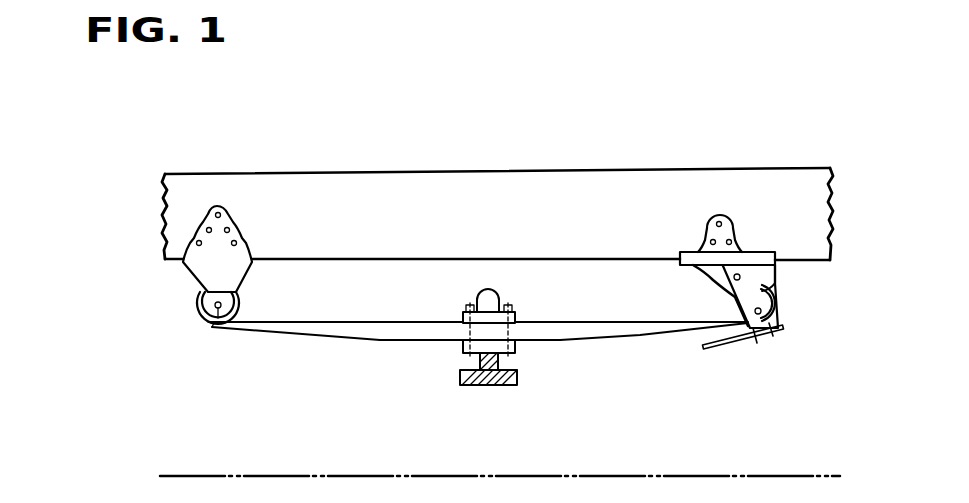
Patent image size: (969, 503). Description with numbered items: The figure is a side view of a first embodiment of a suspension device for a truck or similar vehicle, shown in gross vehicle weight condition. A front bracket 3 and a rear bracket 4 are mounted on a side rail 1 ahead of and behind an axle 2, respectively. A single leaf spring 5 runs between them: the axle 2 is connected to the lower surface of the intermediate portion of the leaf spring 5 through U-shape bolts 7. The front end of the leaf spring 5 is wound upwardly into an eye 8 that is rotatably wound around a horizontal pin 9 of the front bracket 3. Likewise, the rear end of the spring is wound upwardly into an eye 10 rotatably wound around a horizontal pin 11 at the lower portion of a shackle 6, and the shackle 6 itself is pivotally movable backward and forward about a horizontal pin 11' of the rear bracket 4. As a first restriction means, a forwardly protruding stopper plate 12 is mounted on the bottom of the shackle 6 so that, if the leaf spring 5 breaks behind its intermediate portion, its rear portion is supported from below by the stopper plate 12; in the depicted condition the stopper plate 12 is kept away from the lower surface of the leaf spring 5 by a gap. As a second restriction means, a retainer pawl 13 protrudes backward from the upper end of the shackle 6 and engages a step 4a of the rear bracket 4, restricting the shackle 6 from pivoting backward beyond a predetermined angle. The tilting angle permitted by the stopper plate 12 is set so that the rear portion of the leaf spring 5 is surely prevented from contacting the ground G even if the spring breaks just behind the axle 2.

The side rail 1 is at (545, 188).
The axle 2 is at (475, 388).
The front bracket 3 is at (222, 222).
The rear bracket 4 is at (727, 213).
The step 4a is at (716, 270).
The leaf spring 5 is at (587, 341).
The shackle 6 is at (737, 303).
The U-shape bolts 7 is at (468, 305).
The eye 8 is at (197, 312).
The horizontal pin 9 is at (214, 323).
The eye 10 is at (778, 308).
The horizontal pin 11 is at (790, 357).
The horizontal pin 11' is at (695, 295).
The stopper plate 12 is at (731, 347).
The retainer pawl 13 is at (765, 277).
The ground G is at (317, 475).